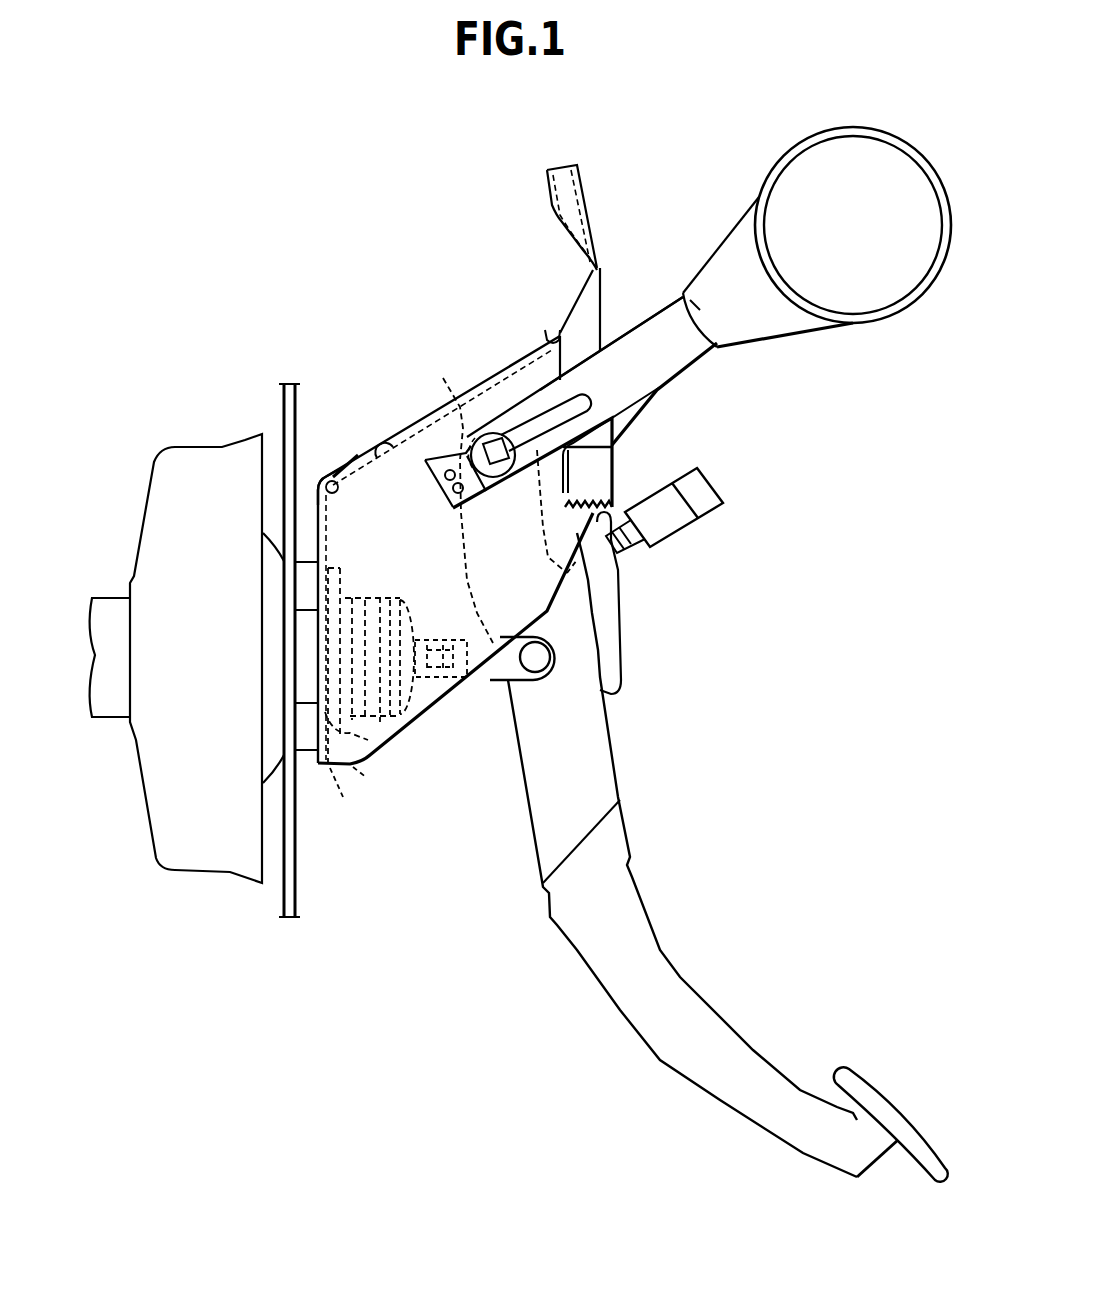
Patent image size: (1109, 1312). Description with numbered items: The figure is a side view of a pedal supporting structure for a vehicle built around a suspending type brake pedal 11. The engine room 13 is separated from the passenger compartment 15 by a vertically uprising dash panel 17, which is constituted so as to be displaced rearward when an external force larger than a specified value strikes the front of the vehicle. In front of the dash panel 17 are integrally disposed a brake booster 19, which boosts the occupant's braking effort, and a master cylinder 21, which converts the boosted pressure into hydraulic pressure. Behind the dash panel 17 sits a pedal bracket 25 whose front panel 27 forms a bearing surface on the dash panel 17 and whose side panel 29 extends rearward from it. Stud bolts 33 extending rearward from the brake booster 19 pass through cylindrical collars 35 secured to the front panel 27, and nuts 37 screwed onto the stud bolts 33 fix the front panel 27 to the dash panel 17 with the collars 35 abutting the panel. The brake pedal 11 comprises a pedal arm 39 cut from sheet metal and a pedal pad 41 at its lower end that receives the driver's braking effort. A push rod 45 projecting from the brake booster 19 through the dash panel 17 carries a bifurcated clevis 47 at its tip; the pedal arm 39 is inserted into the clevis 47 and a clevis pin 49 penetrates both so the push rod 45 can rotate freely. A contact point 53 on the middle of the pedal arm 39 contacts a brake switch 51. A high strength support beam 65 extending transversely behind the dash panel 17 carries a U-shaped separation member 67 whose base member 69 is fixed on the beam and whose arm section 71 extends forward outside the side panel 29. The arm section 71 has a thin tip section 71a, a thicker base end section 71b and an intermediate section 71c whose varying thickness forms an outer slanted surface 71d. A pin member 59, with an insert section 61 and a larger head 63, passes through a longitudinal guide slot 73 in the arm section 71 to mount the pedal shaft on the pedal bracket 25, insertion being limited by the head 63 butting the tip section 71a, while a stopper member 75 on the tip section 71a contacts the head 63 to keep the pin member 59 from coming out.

The brake pedal 11 is at (503, 952).
The engine room 13 is at (182, 373).
The passenger compartment 15 is at (465, 876).
The dash panel 17 is at (298, 898).
The brake booster 19 is at (198, 871).
The master cylinder 21 is at (110, 597).
The pedal bracket 25 is at (385, 372).
The front panel 27 is at (303, 505).
The side panel 29 is at (417, 716).
The stud bolt 33 is at (358, 757).
The collar 35 is at (303, 758).
The nut 37 is at (339, 797).
The pedal arm 39 is at (619, 768).
The pedal pad 41 is at (880, 1088).
The push rod 45 is at (452, 695).
The clevis 47 is at (490, 683).
The clevis pin 49 is at (530, 681).
The brake switch 51 is at (677, 537).
The contact point 53 is at (594, 600).
The pin member 59 is at (491, 490).
The insert section 61 is at (443, 378).
The head 63 is at (490, 432).
The support beam 65 is at (893, 310).
The separation member 67 is at (712, 352).
The base member 69 is at (704, 300).
The arm section 71 is at (470, 522).
The tip section 71a is at (575, 558).
The base end section 71b is at (633, 323).
The intermediate section 71c is at (530, 397).
The slanted surface 71d is at (570, 458).
The guide slot 73 is at (637, 415).
The stopper member 75 is at (433, 461).